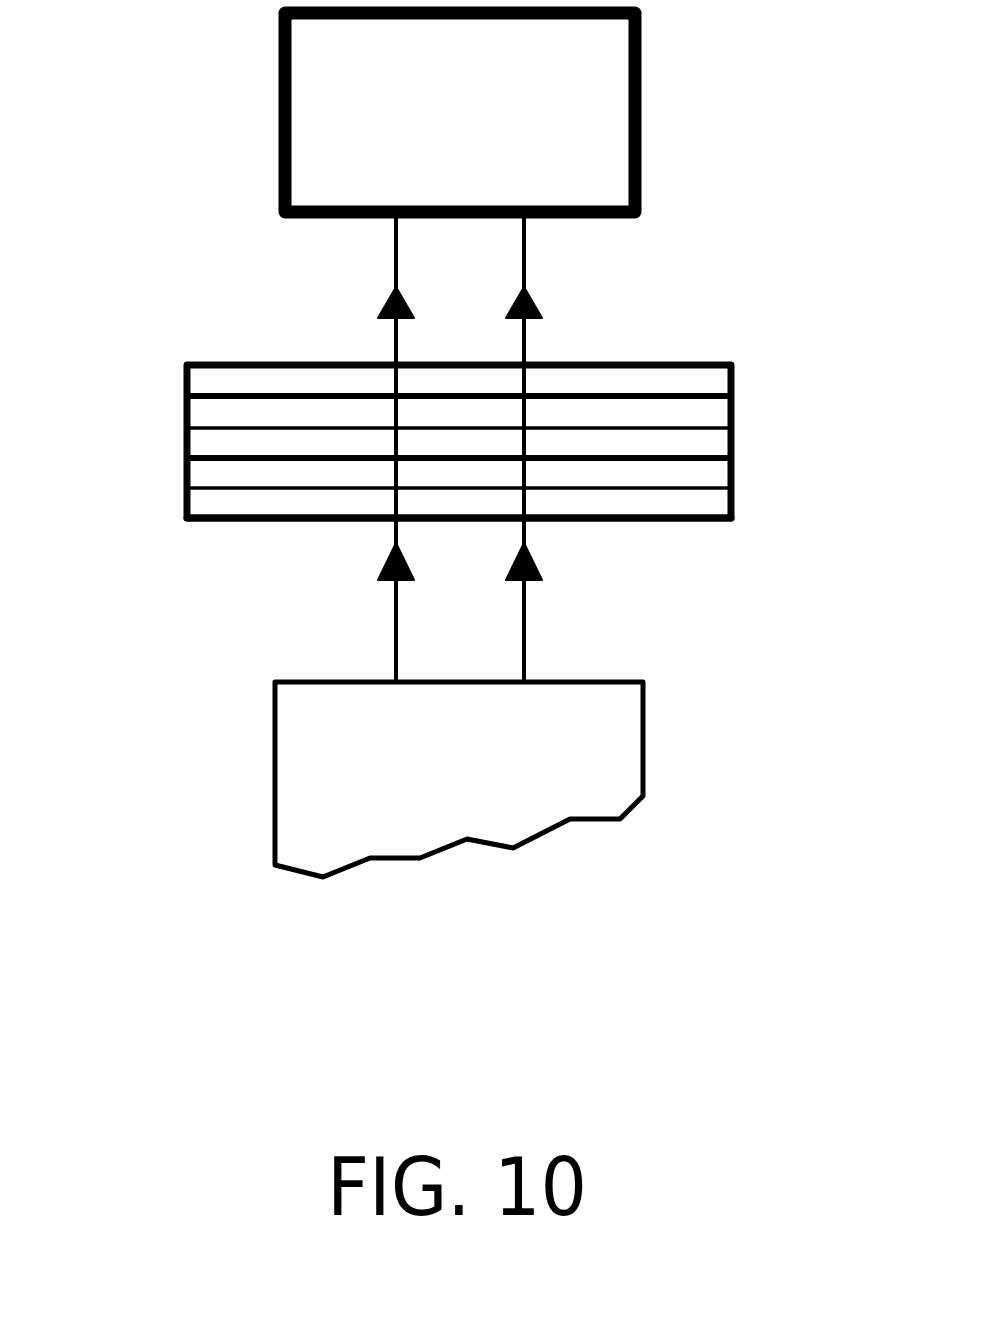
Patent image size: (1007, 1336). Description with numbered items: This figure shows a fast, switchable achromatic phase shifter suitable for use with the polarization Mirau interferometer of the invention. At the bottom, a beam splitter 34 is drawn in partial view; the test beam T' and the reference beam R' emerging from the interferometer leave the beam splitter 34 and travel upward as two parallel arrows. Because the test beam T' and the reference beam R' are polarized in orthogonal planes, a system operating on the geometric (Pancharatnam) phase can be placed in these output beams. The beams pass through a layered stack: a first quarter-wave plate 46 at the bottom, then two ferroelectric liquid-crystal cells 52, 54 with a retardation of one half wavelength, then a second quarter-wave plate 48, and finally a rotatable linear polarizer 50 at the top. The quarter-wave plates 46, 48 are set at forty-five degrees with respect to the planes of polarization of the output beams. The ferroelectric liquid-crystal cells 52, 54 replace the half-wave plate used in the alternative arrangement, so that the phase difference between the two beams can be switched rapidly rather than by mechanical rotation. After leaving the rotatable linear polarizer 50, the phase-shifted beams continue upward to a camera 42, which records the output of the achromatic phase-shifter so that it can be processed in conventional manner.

The camera 42 is at (610, 92).
The rotatable linear polarizer 50 is at (708, 380).
The quarter-wave plate 48 is at (710, 412).
The ferroelectric liquid-crystal cell 54 is at (220, 442).
The ferroelectric liquid-crystal cell 52 is at (215, 478).
The quarter-wave plate 46 is at (720, 503).
The beam splitter 34 is at (595, 715).
The test beam T' is at (576, 447).
The reference beam R' is at (511, 447).